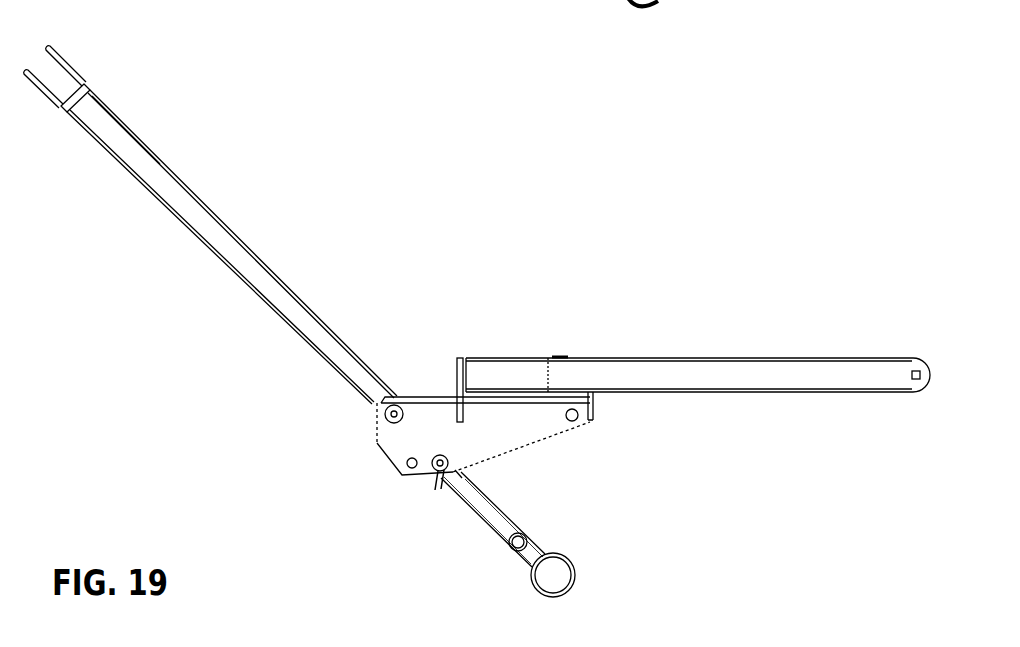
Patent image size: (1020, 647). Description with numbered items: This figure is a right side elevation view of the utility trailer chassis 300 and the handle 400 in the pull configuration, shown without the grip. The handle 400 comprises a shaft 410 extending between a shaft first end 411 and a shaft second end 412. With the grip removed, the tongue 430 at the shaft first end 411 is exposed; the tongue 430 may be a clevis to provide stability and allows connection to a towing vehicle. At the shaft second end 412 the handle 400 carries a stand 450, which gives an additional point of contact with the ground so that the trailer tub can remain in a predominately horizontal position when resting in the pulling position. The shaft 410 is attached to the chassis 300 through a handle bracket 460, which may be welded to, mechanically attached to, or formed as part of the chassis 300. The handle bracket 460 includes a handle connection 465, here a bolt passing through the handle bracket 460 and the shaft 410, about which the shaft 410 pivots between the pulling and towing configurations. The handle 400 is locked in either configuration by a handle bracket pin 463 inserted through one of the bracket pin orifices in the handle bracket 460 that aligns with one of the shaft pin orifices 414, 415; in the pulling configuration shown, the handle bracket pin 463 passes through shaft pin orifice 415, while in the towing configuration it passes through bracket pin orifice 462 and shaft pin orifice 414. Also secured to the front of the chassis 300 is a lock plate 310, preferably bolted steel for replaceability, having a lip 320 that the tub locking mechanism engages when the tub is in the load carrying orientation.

The chassis 300 is at (691, 372).
The lock plate 310 is at (468, 394).
The lip 320 is at (466, 357).
The handle 400 is at (399, 310).
The shaft 410 is at (283, 312).
The shaft first end 411 is at (105, 90).
The shaft second end 412 is at (505, 572).
The shaft pin orifice 414 is at (522, 537).
The shaft pin orifice 415 is at (467, 480).
The tongue 430 is at (56, 102).
The stand 450 is at (593, 556).
The handle bracket 460 is at (461, 463).
The bracket pin orifice 462 is at (575, 421).
The handle bracket pin 463 is at (438, 472).
The handle connection 465 is at (390, 416).